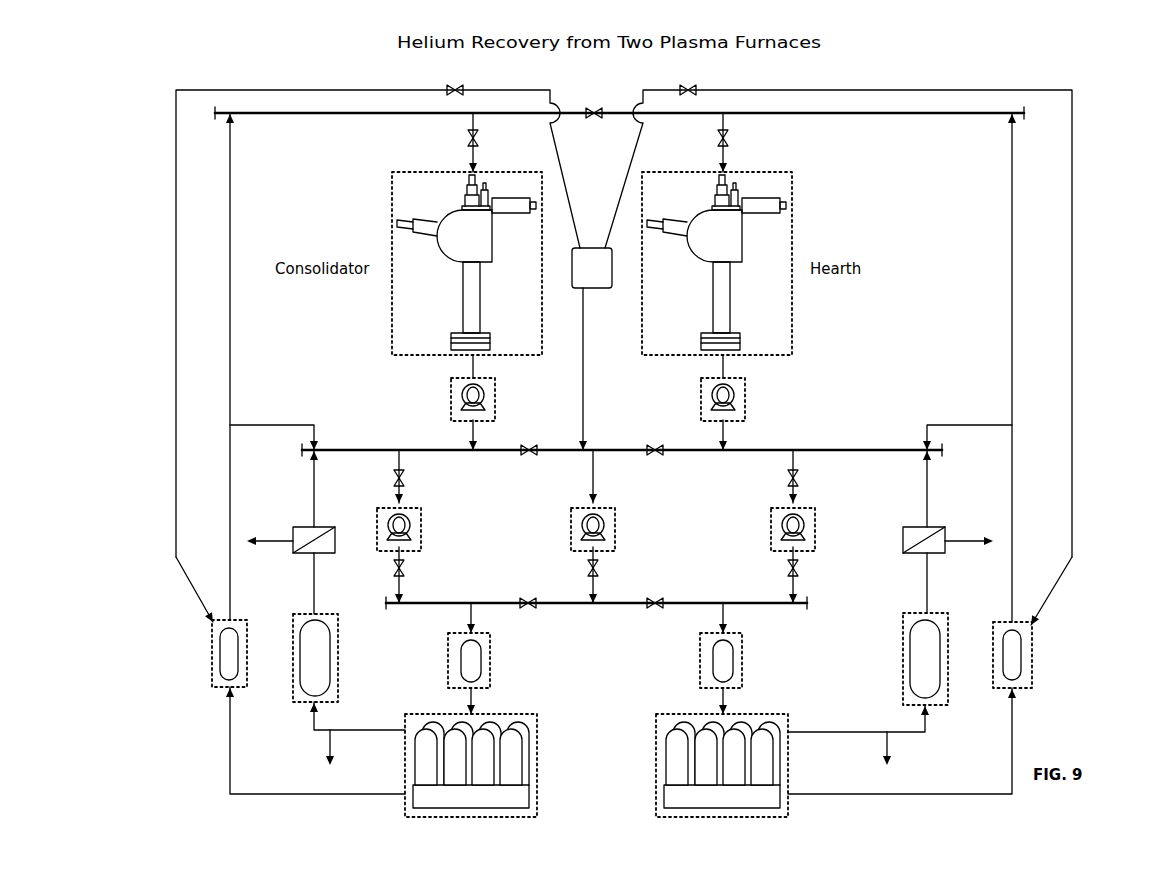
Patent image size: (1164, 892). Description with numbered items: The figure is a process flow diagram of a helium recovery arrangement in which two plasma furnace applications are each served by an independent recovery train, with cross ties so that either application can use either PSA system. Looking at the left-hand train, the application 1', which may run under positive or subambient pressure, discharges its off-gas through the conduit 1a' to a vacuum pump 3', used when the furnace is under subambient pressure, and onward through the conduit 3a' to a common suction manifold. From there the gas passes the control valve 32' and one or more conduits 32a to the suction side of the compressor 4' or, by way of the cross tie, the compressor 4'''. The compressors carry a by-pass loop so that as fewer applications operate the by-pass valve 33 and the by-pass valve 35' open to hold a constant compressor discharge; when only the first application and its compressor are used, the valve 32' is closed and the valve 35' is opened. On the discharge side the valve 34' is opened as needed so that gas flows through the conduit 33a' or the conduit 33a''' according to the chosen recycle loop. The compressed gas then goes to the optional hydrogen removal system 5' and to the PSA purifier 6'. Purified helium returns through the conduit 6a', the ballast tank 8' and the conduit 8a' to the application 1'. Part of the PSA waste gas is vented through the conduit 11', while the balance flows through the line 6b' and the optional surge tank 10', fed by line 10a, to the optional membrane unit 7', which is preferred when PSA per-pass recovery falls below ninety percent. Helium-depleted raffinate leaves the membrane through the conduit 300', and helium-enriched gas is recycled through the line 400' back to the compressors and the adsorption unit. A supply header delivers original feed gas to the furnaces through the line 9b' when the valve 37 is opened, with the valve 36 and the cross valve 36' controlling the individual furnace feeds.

The application 1' is at (467, 263).
The conduit 1a' is at (455, 367).
The vacuum pump 3' is at (482, 399).
The conduit 3a' is at (486, 435).
The compressor 4' is at (388, 529).
The compressor 4''' is at (573, 529).
The hydrogen removal system 5' is at (480, 658).
The PSA purifier 6' is at (471, 777).
The conduit 6a' is at (315, 751).
The line 6b' is at (357, 731).
The membrane unit 7' is at (302, 556).
The ballast tank 8' is at (219, 653).
The conduit 8a' is at (250, 425).
The line 9b' is at (205, 368).
The surge tank 10' is at (330, 658).
The first storage tank feed line 10a is at (314, 588).
The conduit 11' is at (315, 747).
The control valve 32' is at (528, 440).
The conduit 32a is at (448, 452).
The by-pass valve 33 is at (408, 570).
The conduit 33a' is at (431, 616).
The conduit 33a''' is at (769, 617).
The valve 34' is at (528, 594).
The by-pass valve 35' is at (413, 486).
The consolidator supply valve 36 is at (484, 142).
The header cross valve 36' is at (594, 104).
The valve 37 is at (466, 70).
The conduit 300' is at (270, 533).
The line 400' is at (333, 488).